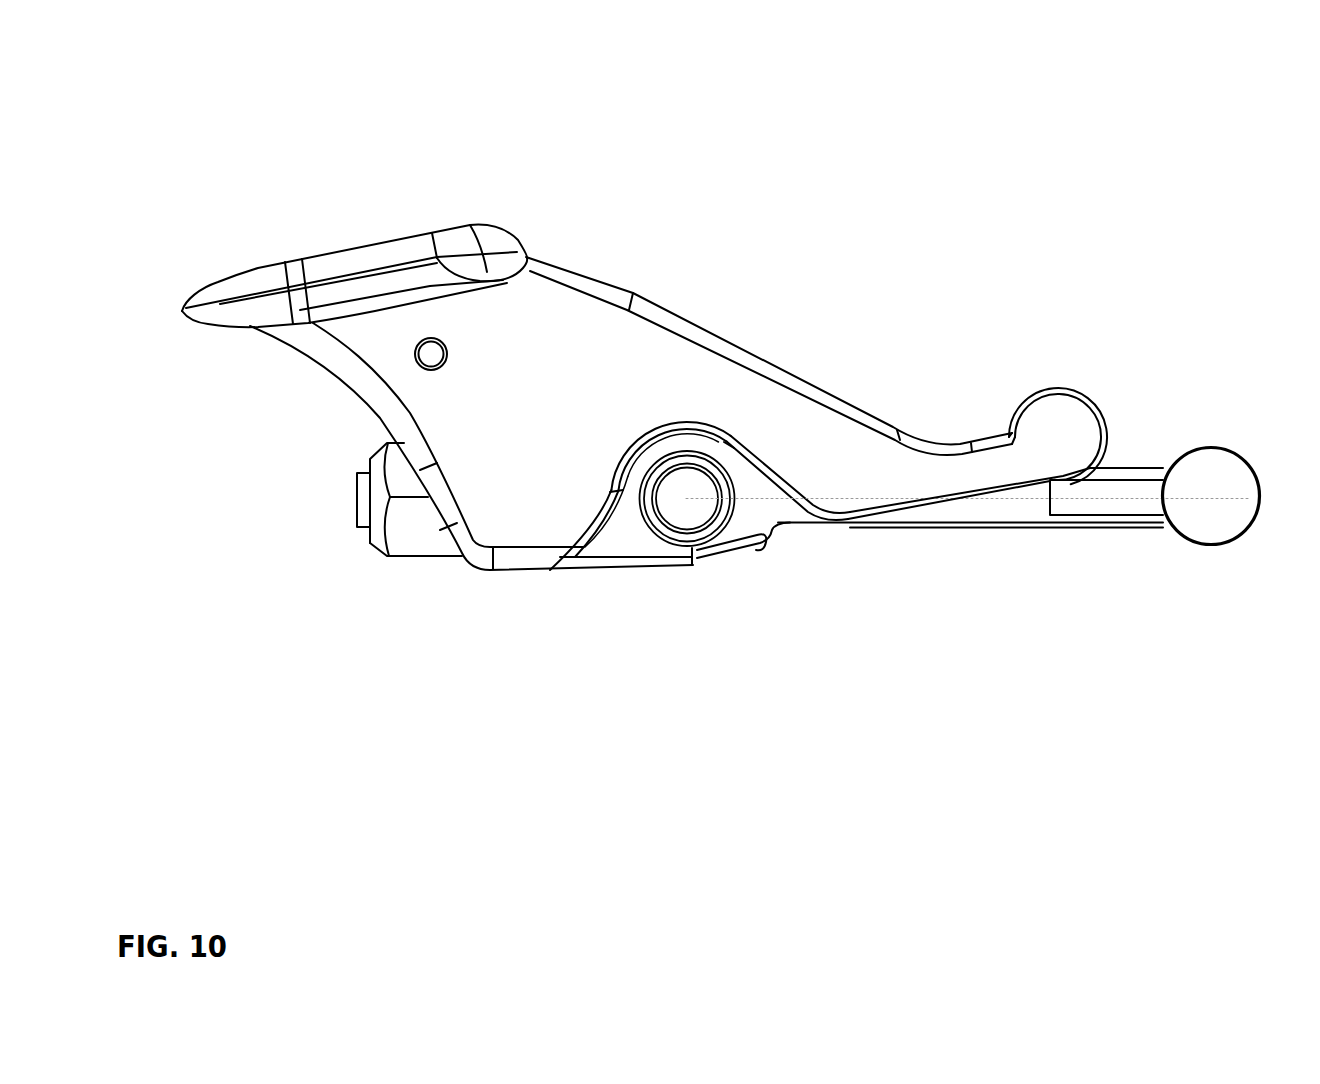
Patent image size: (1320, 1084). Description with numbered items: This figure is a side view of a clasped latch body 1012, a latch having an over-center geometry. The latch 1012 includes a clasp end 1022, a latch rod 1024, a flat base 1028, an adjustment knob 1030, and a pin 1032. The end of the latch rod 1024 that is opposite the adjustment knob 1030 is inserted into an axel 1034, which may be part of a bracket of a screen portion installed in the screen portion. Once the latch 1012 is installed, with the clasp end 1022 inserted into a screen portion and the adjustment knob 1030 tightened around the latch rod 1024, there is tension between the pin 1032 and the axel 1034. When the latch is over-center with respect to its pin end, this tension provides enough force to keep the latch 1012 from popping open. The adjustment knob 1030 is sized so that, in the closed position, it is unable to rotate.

The clasped latch body 1012 is at (1192, 61).
The flat base 1028 is at (446, 228).
The clasp end 1022 is at (1050, 393).
The pin 1032 is at (690, 513).
The latch rod 1024 is at (1010, 513).
The axel 1034 is at (1218, 450).
The adjustment knob 1030 is at (407, 537).